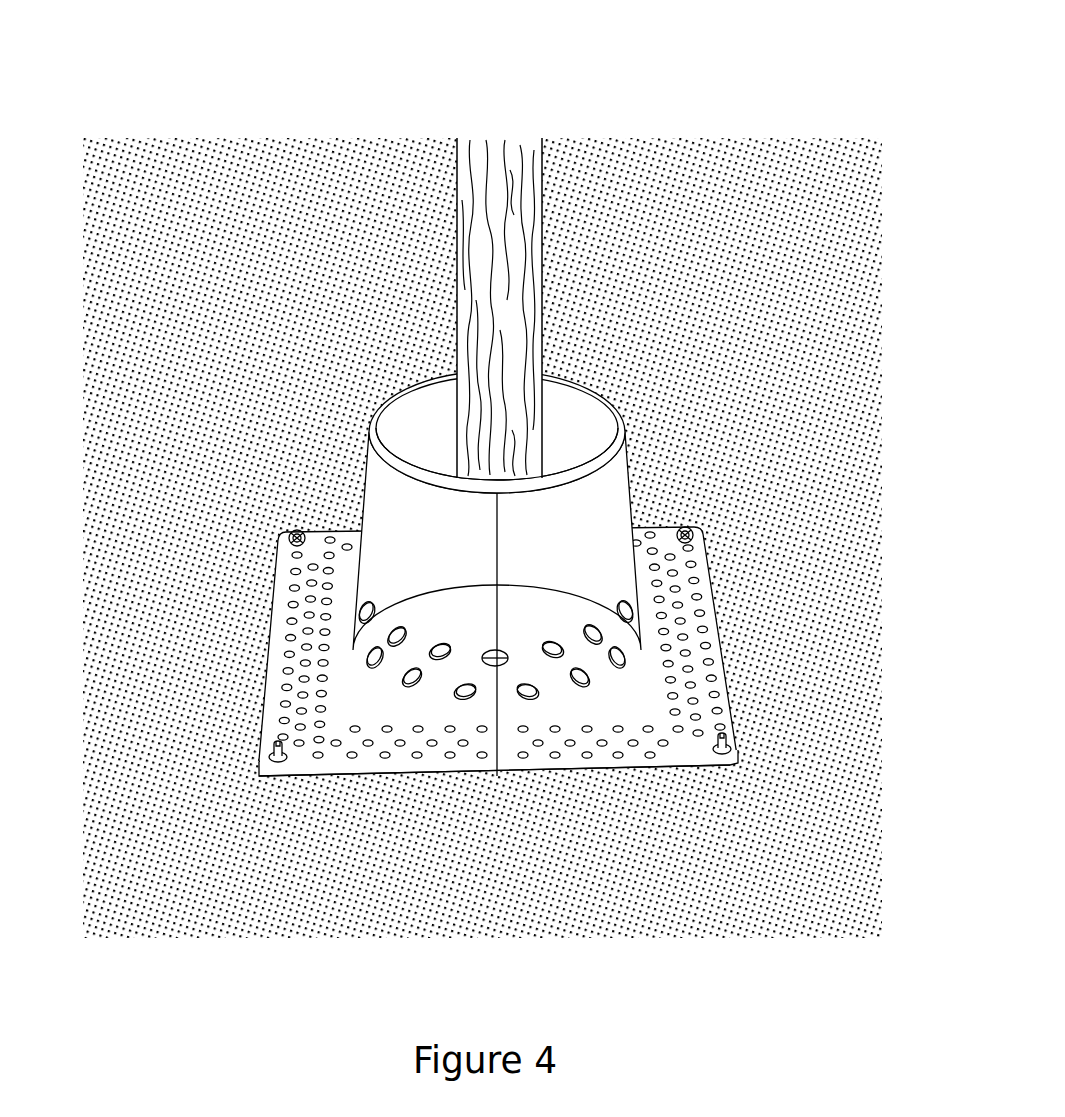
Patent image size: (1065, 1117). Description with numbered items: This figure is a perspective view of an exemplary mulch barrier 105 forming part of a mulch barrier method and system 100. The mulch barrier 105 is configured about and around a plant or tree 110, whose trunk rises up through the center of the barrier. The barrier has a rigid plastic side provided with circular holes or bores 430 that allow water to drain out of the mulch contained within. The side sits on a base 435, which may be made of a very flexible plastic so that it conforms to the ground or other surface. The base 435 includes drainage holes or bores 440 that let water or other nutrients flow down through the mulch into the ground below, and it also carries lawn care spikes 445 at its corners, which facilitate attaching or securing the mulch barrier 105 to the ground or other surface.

The mulch barrier method and system 100 is at (168, 128).
The mulch barrier 105 is at (410, 522).
The plant or tree 110 is at (490, 355).
The circular holes or bores 430 is at (568, 643).
The base 435 is at (730, 667).
The drainage holes or bores 440 is at (297, 695).
The lawn care spikes 445 is at (738, 745).